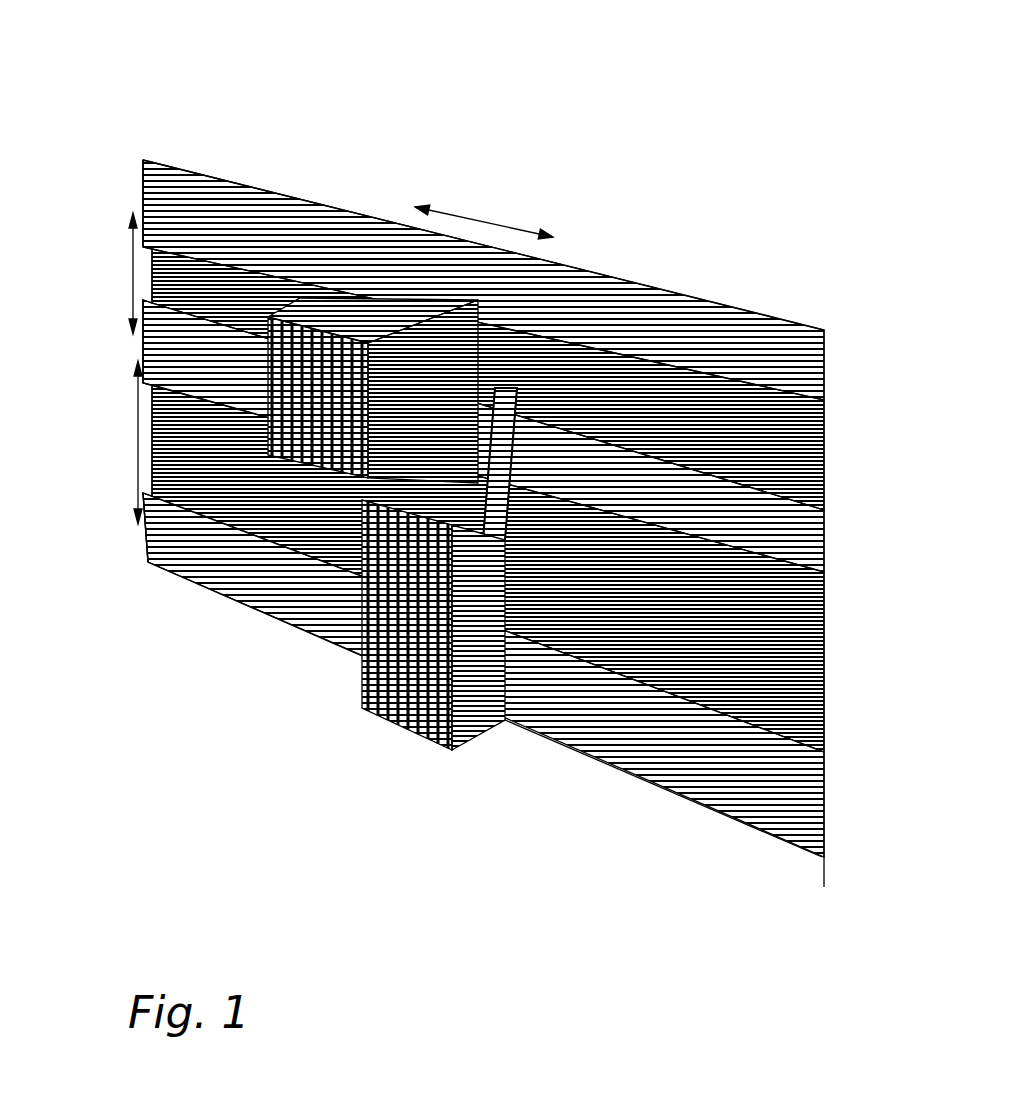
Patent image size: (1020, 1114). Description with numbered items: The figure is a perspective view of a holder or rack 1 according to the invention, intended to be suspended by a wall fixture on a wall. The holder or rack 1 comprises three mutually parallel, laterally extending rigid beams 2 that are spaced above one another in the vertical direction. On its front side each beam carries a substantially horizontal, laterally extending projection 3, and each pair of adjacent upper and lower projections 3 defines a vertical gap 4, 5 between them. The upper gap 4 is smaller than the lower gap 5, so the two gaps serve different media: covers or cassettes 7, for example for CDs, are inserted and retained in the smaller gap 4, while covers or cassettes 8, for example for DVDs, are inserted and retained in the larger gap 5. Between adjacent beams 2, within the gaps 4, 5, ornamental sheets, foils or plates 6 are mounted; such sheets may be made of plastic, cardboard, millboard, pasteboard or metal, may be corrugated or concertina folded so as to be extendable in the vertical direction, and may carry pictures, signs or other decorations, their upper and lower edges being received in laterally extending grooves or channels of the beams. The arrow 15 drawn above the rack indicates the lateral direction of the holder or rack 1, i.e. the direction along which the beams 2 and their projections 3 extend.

The holder or rack 1 is at (266, 130).
The rigid beams 2 is at (824, 372).
The projection 3 is at (140, 210).
The gap 4 is at (118, 273).
The gap 5 is at (124, 442).
The ornamental sheet 6 is at (824, 462).
The covers or cassettes 7 is at (463, 316).
The covers or cassettes 8 is at (505, 722).
The arrow 15 is at (483, 220).